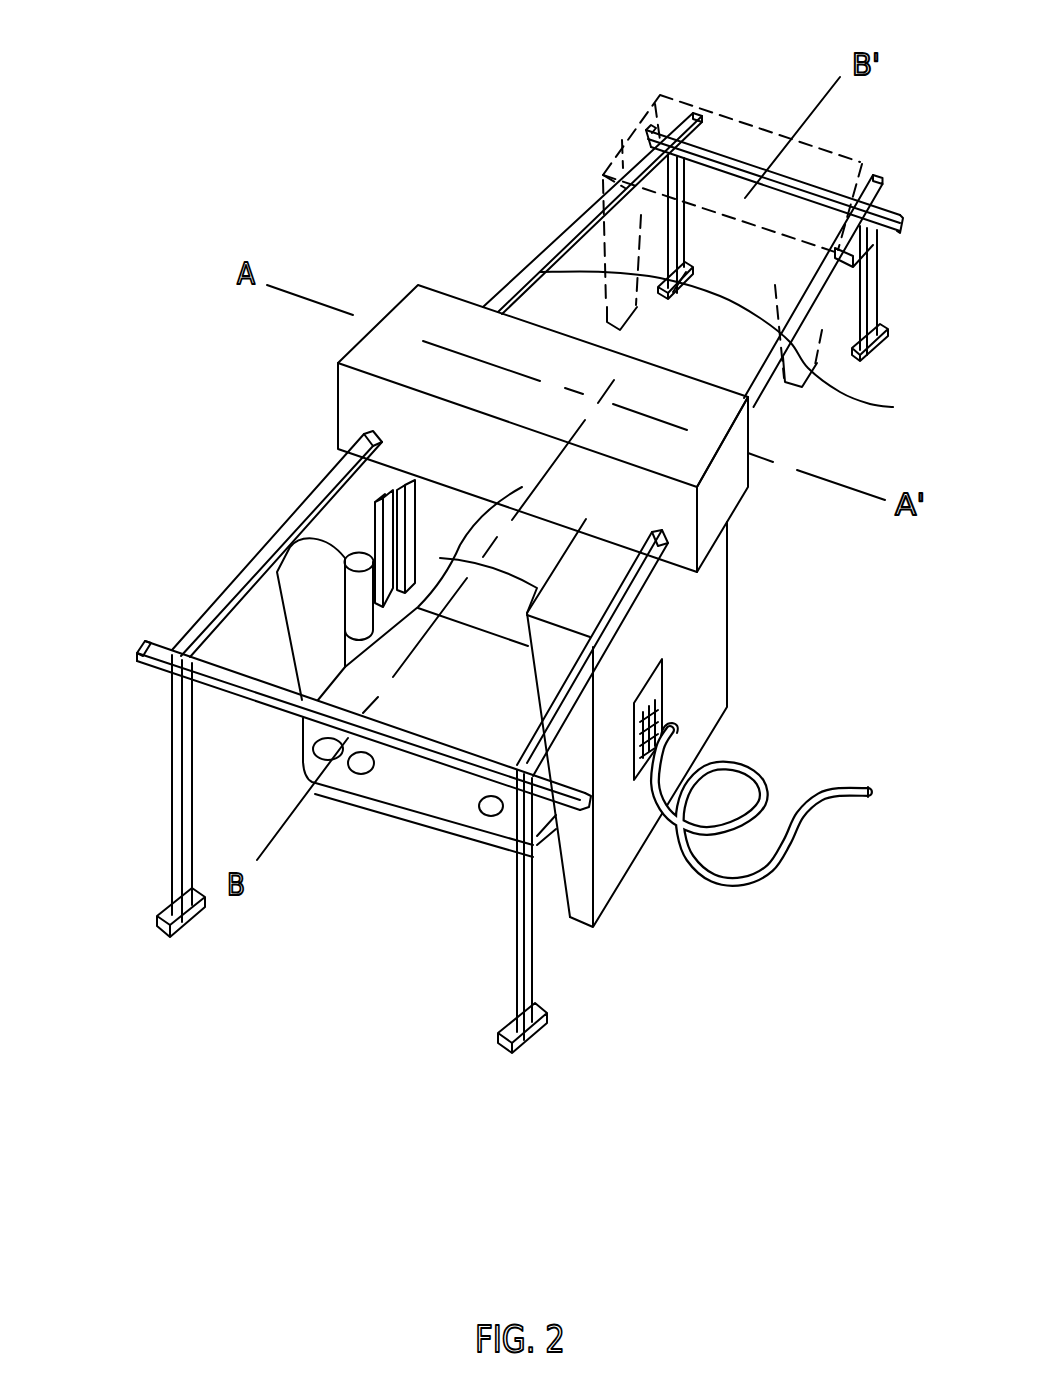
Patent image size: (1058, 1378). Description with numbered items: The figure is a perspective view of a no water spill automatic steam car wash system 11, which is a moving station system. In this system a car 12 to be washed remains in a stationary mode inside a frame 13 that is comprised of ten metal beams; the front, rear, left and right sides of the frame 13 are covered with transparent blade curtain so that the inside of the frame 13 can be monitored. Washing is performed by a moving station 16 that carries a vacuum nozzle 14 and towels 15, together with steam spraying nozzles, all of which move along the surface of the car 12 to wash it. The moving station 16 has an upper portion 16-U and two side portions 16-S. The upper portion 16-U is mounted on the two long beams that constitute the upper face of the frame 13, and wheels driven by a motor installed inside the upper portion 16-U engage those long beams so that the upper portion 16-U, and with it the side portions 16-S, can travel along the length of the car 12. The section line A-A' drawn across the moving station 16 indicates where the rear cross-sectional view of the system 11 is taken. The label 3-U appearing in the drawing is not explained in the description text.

The no water spill automatic steam car wash system 11 is at (517, 227).
The car 12 is at (317, 757).
The frame 13 is at (226, 595).
The vacuum nozzle 14 is at (370, 522).
The towels 15 is at (356, 574).
The moving station 16 is at (723, 498).
The upper portion 16-U is at (398, 332).
The side portions 16-S is at (607, 882).
The upstream conveyor unit 3-U is at (750, 355).